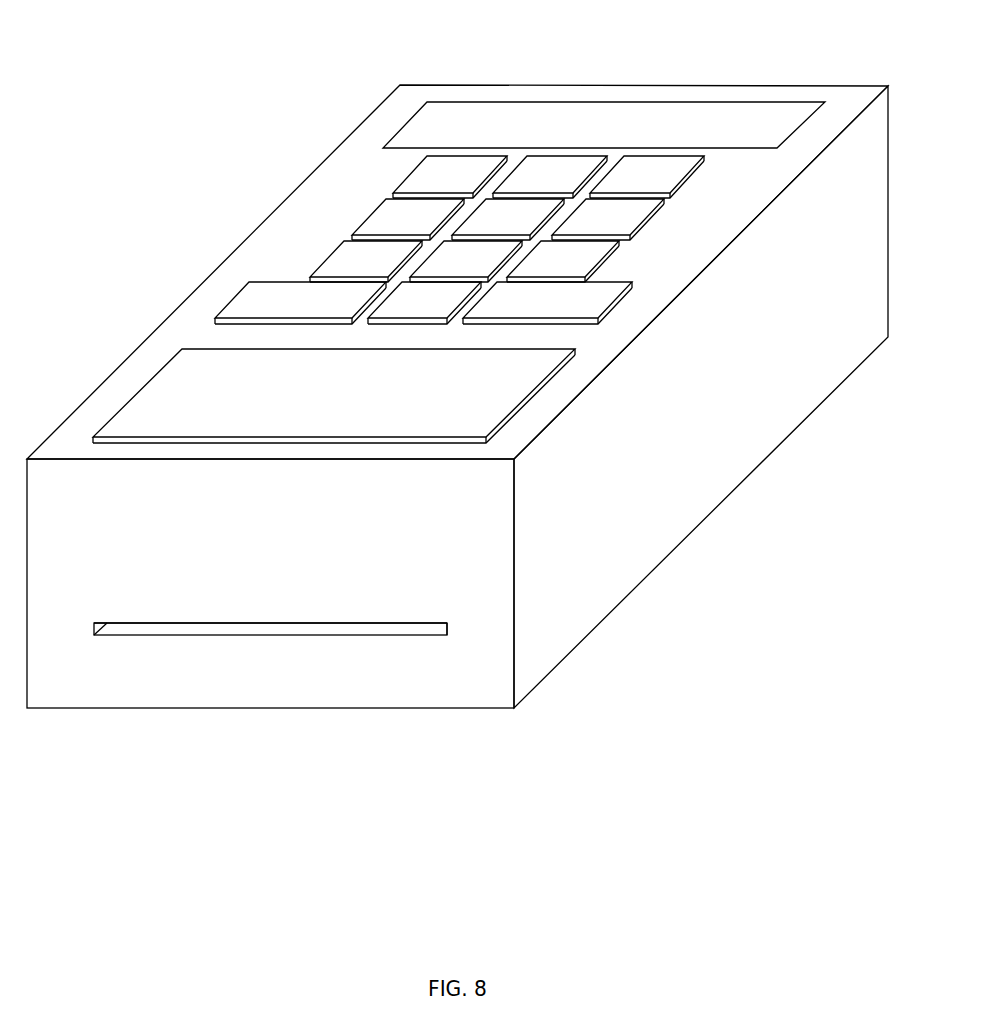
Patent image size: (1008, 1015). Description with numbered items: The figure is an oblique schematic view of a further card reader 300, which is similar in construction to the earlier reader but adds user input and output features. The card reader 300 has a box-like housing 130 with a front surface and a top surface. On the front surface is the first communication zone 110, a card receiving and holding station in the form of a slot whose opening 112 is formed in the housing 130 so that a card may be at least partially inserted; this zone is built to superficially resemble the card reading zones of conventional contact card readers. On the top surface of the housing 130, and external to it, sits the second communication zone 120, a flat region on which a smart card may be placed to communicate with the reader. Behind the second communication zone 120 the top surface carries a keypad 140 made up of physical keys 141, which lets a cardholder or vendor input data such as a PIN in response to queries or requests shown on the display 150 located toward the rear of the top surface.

The card reader 300 is at (462, 452).
The first communication zone 110 is at (306, 660).
The opening 112 is at (447, 629).
The second communication zone 120 is at (205, 348).
The housing 130 is at (688, 485).
The keypad 140 is at (431, 209).
The physical keys 141 is at (325, 257).
The display 150 is at (413, 113).